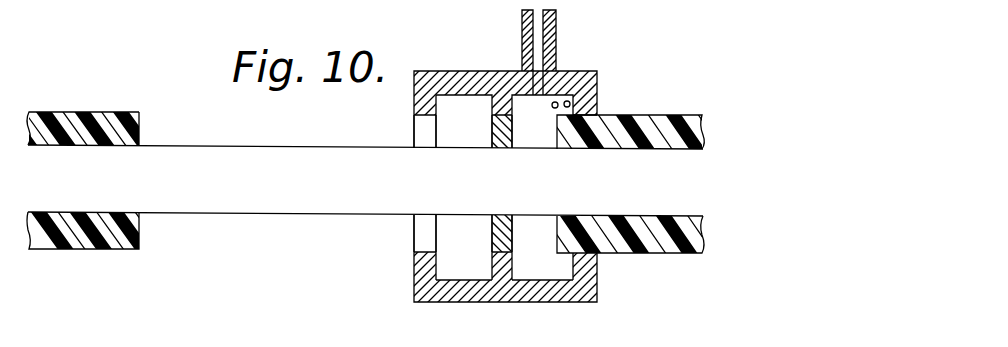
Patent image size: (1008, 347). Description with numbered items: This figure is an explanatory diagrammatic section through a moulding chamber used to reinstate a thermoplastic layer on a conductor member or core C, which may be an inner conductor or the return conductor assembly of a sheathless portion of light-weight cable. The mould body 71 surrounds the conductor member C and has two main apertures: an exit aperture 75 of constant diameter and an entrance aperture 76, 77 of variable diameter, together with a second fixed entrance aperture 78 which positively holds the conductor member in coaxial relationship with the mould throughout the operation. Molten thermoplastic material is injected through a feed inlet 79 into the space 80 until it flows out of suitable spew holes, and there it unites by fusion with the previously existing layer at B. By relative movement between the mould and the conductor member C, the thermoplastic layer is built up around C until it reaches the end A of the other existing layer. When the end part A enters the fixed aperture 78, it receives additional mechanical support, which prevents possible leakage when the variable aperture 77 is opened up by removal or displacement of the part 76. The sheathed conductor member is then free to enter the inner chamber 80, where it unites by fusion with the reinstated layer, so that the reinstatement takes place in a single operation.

The housing 71 is at (514, 337).
The exit aperture 75 is at (576, 100).
The displaceable part of entrance aperture 76 is at (492, 133).
The variable entrance aperture 77 is at (481, 100).
The second fixed entrance aperture 78 is at (414, 127).
The feed inlet 79 is at (556, 22).
The inner chamber 80 is at (583, 113).
The end of thermoplastic layer A is at (118, 113).
The previously existing thermoplastic layer B is at (672, 128).
The conductor member C is at (300, 204).